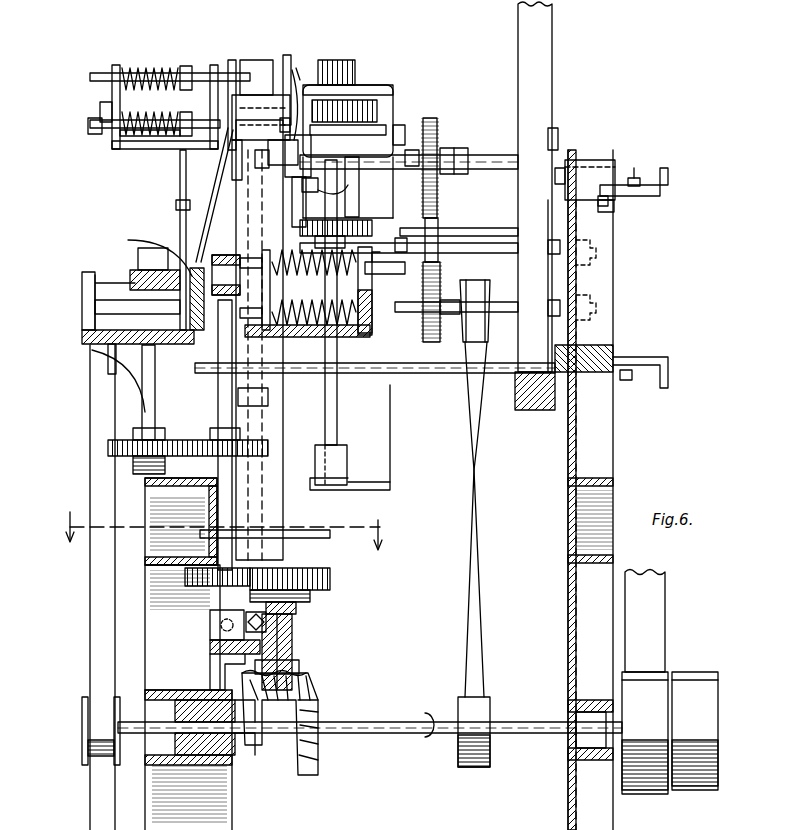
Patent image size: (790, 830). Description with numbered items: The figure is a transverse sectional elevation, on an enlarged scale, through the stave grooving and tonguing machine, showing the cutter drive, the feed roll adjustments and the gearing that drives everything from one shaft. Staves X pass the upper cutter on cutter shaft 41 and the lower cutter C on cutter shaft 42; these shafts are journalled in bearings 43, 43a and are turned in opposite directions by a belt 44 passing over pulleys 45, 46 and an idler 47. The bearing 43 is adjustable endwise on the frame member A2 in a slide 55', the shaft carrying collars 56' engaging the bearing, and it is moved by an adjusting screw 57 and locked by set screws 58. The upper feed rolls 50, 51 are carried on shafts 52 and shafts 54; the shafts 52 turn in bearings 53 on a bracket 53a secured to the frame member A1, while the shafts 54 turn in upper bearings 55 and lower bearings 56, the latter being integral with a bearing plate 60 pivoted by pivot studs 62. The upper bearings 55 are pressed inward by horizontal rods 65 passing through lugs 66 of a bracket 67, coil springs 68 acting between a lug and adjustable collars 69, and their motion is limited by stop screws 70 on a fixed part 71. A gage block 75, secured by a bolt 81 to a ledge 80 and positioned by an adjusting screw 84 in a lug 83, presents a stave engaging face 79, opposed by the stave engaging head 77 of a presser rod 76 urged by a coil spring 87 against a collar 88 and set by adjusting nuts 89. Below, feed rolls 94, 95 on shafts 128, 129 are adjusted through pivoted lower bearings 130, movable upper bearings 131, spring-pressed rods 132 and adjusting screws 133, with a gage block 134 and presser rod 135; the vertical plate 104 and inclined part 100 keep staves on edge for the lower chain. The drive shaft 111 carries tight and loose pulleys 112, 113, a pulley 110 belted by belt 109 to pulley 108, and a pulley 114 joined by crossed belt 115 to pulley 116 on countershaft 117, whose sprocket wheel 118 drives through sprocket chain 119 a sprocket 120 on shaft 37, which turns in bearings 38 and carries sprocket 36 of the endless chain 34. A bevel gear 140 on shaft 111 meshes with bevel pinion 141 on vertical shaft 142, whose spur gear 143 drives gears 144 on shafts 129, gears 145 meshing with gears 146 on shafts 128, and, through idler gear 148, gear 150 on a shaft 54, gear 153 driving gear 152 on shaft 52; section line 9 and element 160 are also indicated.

The belt 44 is at (539, 187).
The pulley 45 is at (557, 138).
The pulley 46 is at (505, 412).
The frame member A2 is at (614, 479).
The collars 56' is at (586, 164).
The slide 55' is at (621, 222).
The set screws 58 is at (636, 176).
The adjusting screw 57 is at (670, 177).
The bearing 43 is at (612, 202).
The tight pulley 112 is at (645, 733).
The loose pulley 113 is at (695, 731).
The drive shaft 111 is at (388, 724).
The pulley 114 is at (492, 702).
The pulley 110 is at (80, 716).
The belt 109 is at (90, 612).
The pulley 108 is at (82, 369).
The shafts 128 is at (142, 415).
The shafts 129 is at (218, 412).
The lower cutter C is at (170, 395).
The gears 146 is at (108, 456).
The gears 144 is at (190, 590).
The frame member A1 is at (168, 760).
The bevel pinion 141 is at (228, 727).
The section line 9 is at (216, 537).
The shafts 54 is at (262, 568).
The gear 150 is at (330, 579).
The spur gear 143 is at (310, 592).
The idler gear 148 is at (290, 533).
The pivot stud 62 is at (266, 620).
The vertical shaft 142 is at (296, 612).
The lower bearings 56 is at (309, 652).
The bearing plate 60 is at (299, 660).
The pivoted lower bearings 130 is at (212, 628).
The bevel gear 140 is at (300, 777).
The gears 145 is at (283, 450).
The bearing 43a is at (320, 190).
The shafts 52 is at (338, 408).
The bearings 53 is at (364, 72).
The bracket 53a is at (392, 484).
The feed rolls 50 is at (356, 120).
The gage block 75 is at (332, 75).
The bolt 81 is at (375, 124).
The lug 83 is at (400, 130).
The adjusting screw 84 is at (414, 150).
The ledge 80 is at (362, 160).
The shaft 37 is at (438, 148).
The sprocket 120 is at (442, 150).
The cutter shaft 41 is at (490, 170).
The gear 153 is at (372, 228).
The sprocket chain 119 is at (452, 228).
The gear 152 is at (408, 243).
The idler 47 is at (515, 245).
The spring-pressed rods 132 is at (386, 275).
The sprocket wheel 118 is at (441, 292).
The countershaft 117 is at (497, 302).
The pulley 116 is at (462, 330).
The cutter shaft 42 is at (432, 374).
The crossed belt 115 is at (484, 614).
The staves X is at (276, 243).
The feed rolls 95 is at (278, 291).
The presser rod 135 is at (272, 343).
The movable upper bearings 131 is at (240, 270).
The adjusting screws 133 is at (206, 250).
The vertical plate 104 is at (180, 224).
The downwardly inclined part 100 is at (176, 208).
The gage block 134 is at (132, 272).
The feed rolls 94 is at (95, 302).
The endless chain 34 is at (275, 146).
The nut 160 is at (290, 150).
The bearings 38 is at (296, 162).
The sprocket 36 is at (298, 186).
The stop screws 70 is at (290, 66).
The fixed part 71 is at (308, 79).
The upper bearings 55 is at (257, 52).
The feed rolls 51 is at (232, 78).
The stave engaging head 77 is at (244, 154).
The stave engaging face 79 is at (280, 128).
The lugs 66 is at (115, 64).
The bracket 67 is at (118, 150).
The horizontal rods 65 is at (90, 77).
The collar 88 is at (176, 97).
The adjustable collars 69 is at (186, 66).
The coil springs 68 is at (168, 88).
The adjusting nuts 89 is at (100, 110).
The presser rod 76 is at (90, 130).
The coil spring 87 is at (160, 136).